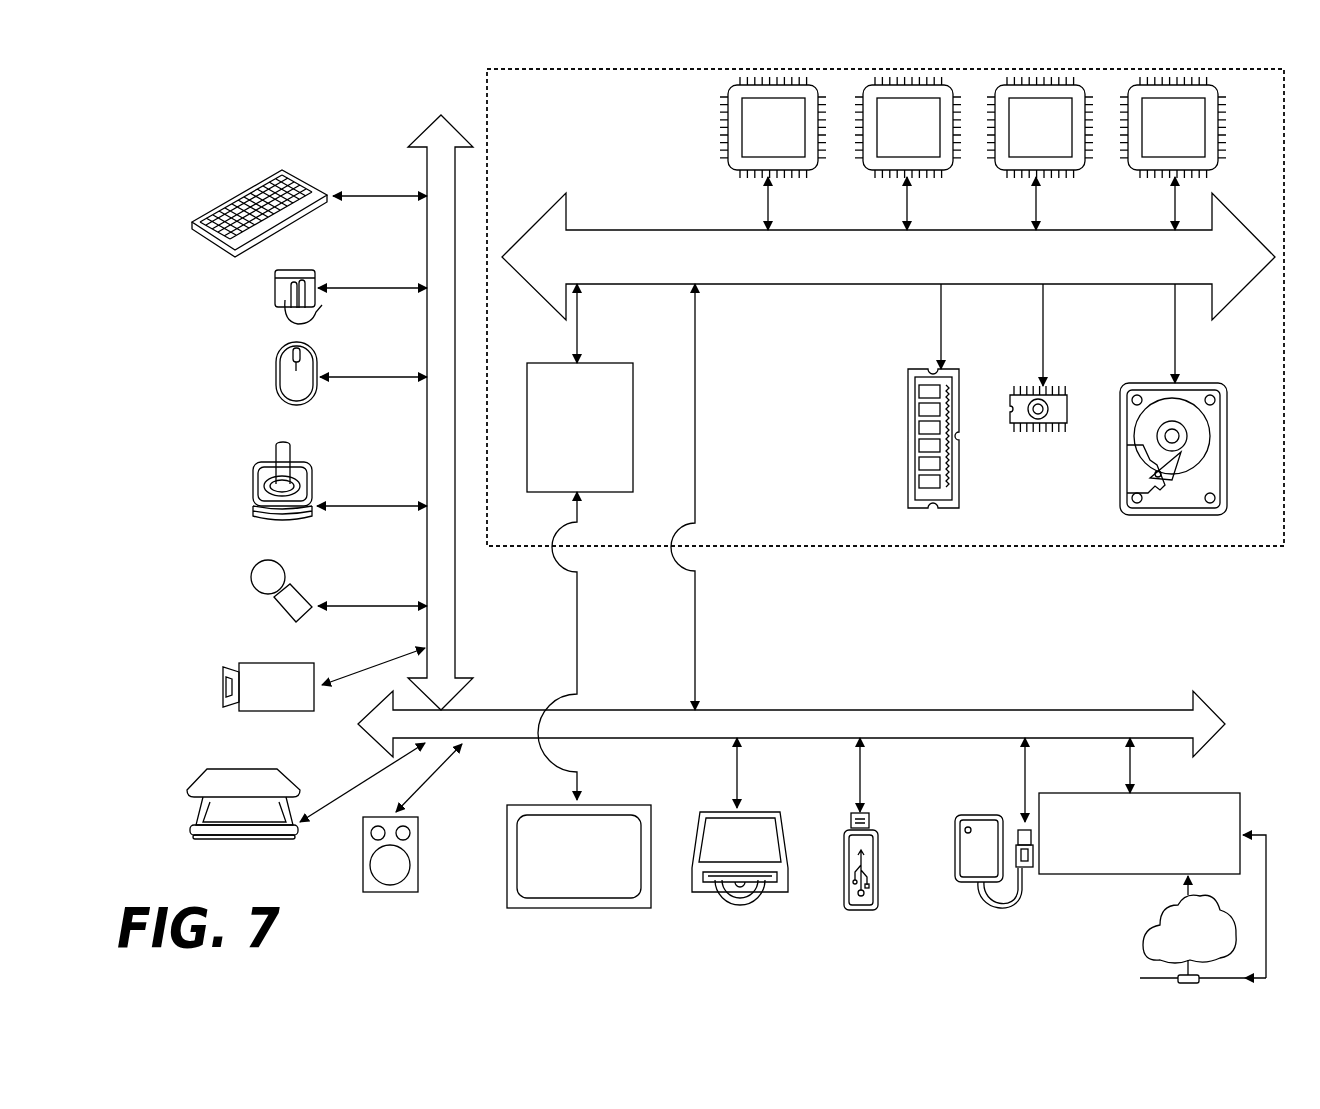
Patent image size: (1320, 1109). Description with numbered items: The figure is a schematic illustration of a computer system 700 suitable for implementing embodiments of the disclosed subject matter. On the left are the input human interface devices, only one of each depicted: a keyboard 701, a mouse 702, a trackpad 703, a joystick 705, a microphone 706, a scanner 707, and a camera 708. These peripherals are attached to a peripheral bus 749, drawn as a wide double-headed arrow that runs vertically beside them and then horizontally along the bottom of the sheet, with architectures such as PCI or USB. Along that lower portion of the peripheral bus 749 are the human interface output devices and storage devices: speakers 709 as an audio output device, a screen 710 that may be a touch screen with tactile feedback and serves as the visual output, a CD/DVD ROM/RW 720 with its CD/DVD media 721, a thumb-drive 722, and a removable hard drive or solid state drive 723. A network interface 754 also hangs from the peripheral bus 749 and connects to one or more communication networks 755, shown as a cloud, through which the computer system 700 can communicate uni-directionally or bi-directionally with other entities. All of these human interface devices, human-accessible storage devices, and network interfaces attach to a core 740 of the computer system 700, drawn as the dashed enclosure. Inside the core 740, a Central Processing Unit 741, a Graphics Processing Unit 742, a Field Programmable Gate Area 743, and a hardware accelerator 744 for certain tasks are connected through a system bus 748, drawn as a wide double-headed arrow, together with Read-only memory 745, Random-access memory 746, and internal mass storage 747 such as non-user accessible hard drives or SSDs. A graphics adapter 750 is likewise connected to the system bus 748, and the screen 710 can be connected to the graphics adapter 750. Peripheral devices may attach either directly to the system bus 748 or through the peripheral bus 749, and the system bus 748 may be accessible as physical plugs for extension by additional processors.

The computer system 700 is at (236, 152).
The keyboard 701 is at (192, 226).
The mouse 702 is at (276, 380).
The trackpad 703 is at (275, 292).
The joystick 705 is at (253, 505).
The microphone 706 is at (252, 575).
The scanner 707 is at (192, 830).
The camera 708 is at (223, 688).
The speakers 709 is at (392, 892).
The touch screen 710 is at (578, 910).
The CD/DVD ROM/RW 720 is at (785, 895).
The CD/DVD media 721 is at (724, 898).
The thumb-drive 722 is at (866, 912).
The removable hard drive or solid state drive 723 is at (965, 882).
The core 740 is at (878, 548).
The Central Processing Unit 741 is at (773, 153).
The Graphics Processing Unit 742 is at (908, 153).
The Field Programmable Gate Area 743 is at (1040, 153).
The hardware accelerator 744 is at (1173, 153).
The Read-only memory 745 is at (1032, 436).
The Random-access memory 746 is at (905, 470).
The internal mass storage 747 is at (1140, 380).
The system bus 748 is at (888, 256).
The peripheral bus 749 is at (427, 160).
The graphics adapter 750 is at (580, 542).
The network interface 754 is at (1152, 858).
The communication network 755 is at (1143, 950).